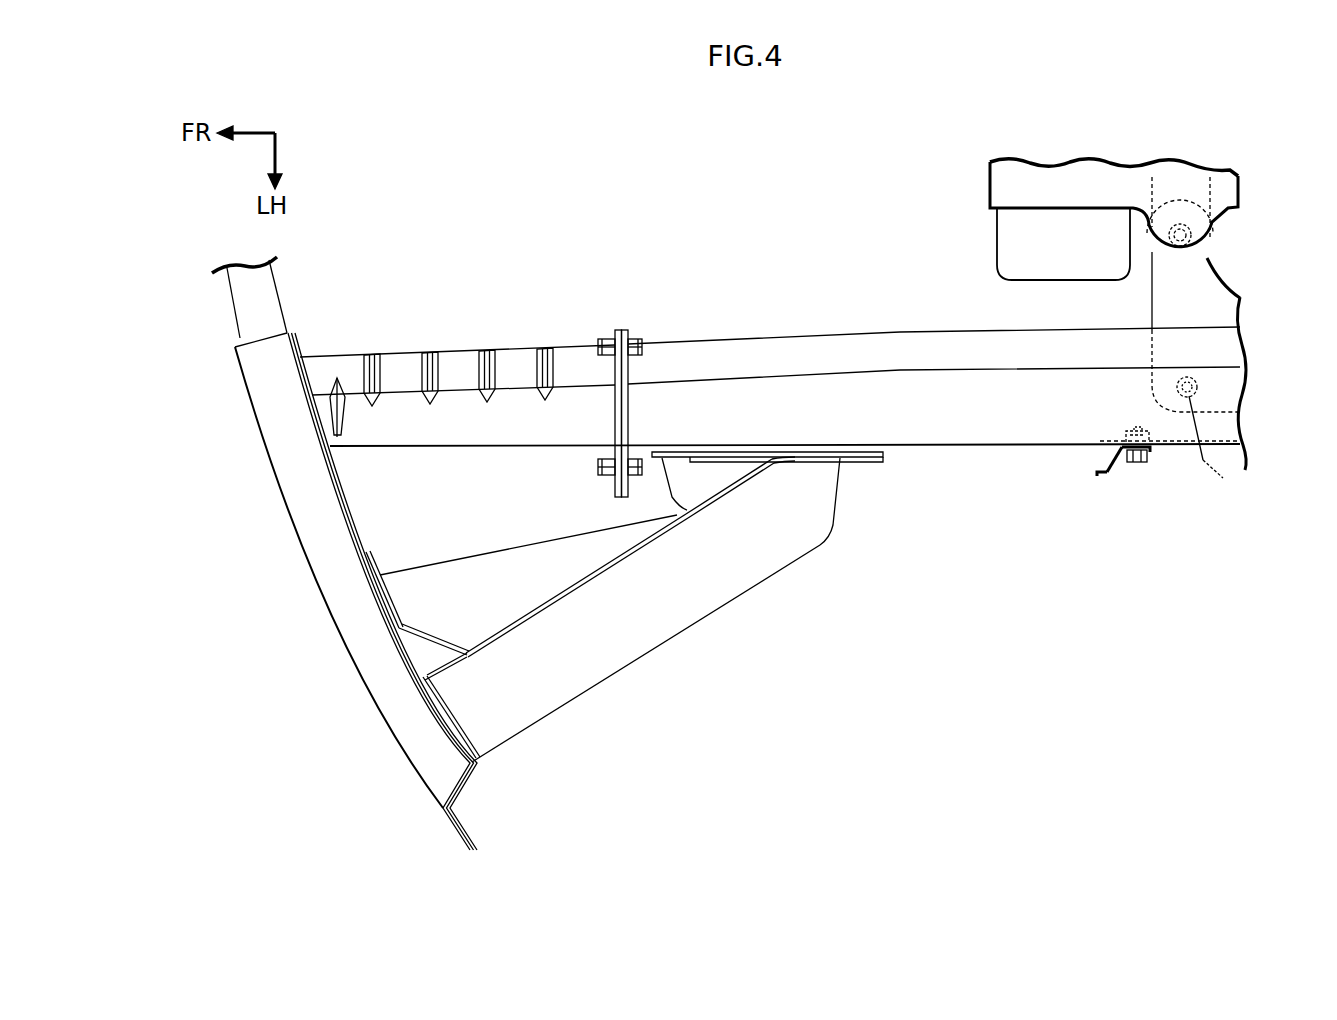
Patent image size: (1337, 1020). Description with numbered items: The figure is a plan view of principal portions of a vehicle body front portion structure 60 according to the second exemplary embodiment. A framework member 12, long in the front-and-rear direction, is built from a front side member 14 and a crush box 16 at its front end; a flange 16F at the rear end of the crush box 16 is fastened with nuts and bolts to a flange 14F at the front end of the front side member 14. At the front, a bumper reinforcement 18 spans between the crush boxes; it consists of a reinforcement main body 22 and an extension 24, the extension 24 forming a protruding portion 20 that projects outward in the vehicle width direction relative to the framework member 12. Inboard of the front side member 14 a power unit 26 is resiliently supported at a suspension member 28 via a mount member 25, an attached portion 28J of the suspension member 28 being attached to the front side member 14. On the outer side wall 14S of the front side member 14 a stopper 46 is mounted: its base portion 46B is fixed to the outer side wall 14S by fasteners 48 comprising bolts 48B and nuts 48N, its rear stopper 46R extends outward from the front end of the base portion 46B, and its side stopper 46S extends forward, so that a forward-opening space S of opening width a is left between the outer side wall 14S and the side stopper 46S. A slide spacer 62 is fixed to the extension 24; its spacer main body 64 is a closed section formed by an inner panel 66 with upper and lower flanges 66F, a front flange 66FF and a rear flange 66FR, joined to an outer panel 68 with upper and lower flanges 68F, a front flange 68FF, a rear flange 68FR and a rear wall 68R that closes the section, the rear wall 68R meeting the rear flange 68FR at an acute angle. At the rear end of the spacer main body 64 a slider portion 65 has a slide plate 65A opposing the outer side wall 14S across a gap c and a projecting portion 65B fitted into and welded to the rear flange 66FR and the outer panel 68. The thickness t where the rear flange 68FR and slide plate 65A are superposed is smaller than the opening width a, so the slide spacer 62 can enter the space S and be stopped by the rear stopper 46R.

The framework member 12 is at (777, 242).
The front side member 14 is at (810, 340).
The crush box 16 is at (562, 357).
The flange 14F is at (630, 330).
The flange 16F is at (621, 330).
The outer side wall 14S is at (943, 448).
The bumper reinforcement 18 is at (335, 235).
The protruding portion 20 is at (350, 677).
The reinforcement main body 22 is at (248, 305).
The extension 24 is at (267, 378).
The mount member 25 is at (1193, 272).
The power unit 26 is at (988, 233).
The suspension member 28 is at (1135, 287).
The attached portion 28J is at (1227, 445).
The stopper 46 is at (1112, 490).
The base portion 46B is at (1150, 452).
The rear stopper 46R is at (1125, 472).
The side stopper 46S is at (1102, 478).
The fastener 48 is at (1142, 390).
The bolt 48B is at (1133, 427).
The nut 48N is at (1126, 433).
The vehicle body front portion structure 60 is at (825, 212).
The slide spacer 62 is at (778, 614).
The spacer main body 64 is at (736, 683).
The slider portion 65 is at (665, 420).
The slide plate 65A is at (768, 456).
The projecting portion 65B is at (693, 470).
The inner panel 66 is at (508, 593).
The flange 66F is at (555, 596).
The front flange 66FF is at (387, 596).
The rear flange 66FR is at (683, 518).
The outer panel 68 is at (620, 640).
The flange 68F is at (647, 543).
The front flange 68FF is at (462, 733).
The rear flange 68FR is at (793, 463).
The rear wall 68R is at (833, 508).
The space S is at (1103, 462).
The opening width a is at (1085, 432).
The gap c is at (847, 452).
The thickness t is at (897, 436).